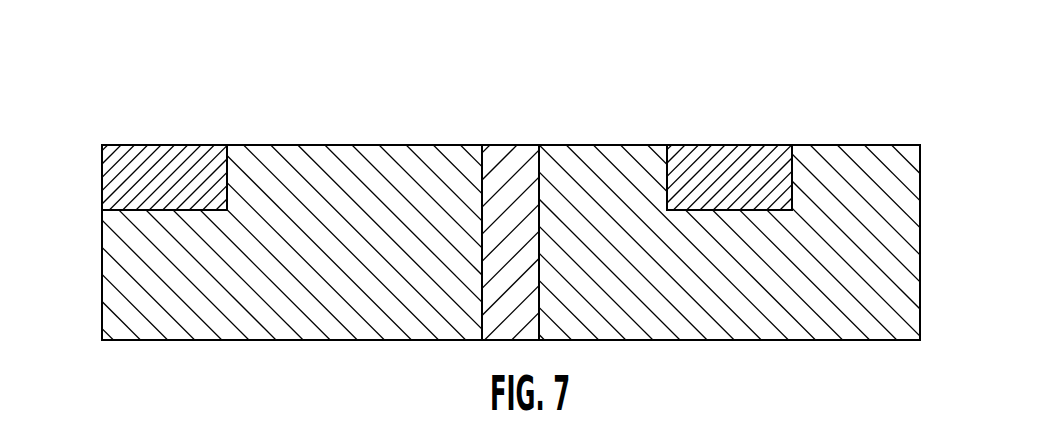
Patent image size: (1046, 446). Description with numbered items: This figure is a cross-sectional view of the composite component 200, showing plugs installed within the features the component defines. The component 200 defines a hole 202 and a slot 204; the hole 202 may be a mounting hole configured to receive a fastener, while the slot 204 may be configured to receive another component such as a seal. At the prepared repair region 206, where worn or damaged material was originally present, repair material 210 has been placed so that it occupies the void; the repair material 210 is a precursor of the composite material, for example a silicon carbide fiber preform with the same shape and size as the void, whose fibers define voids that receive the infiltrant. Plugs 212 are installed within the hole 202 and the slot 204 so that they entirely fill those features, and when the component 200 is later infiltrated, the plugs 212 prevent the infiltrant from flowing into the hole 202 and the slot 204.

The composite component 200 is at (136, 93).
The hole 202 is at (492, 143).
The slot 204 is at (725, 143).
The prepared repair region 206 is at (210, 142).
The repair material 210 is at (178, 145).
The plug 212 is at (518, 145).